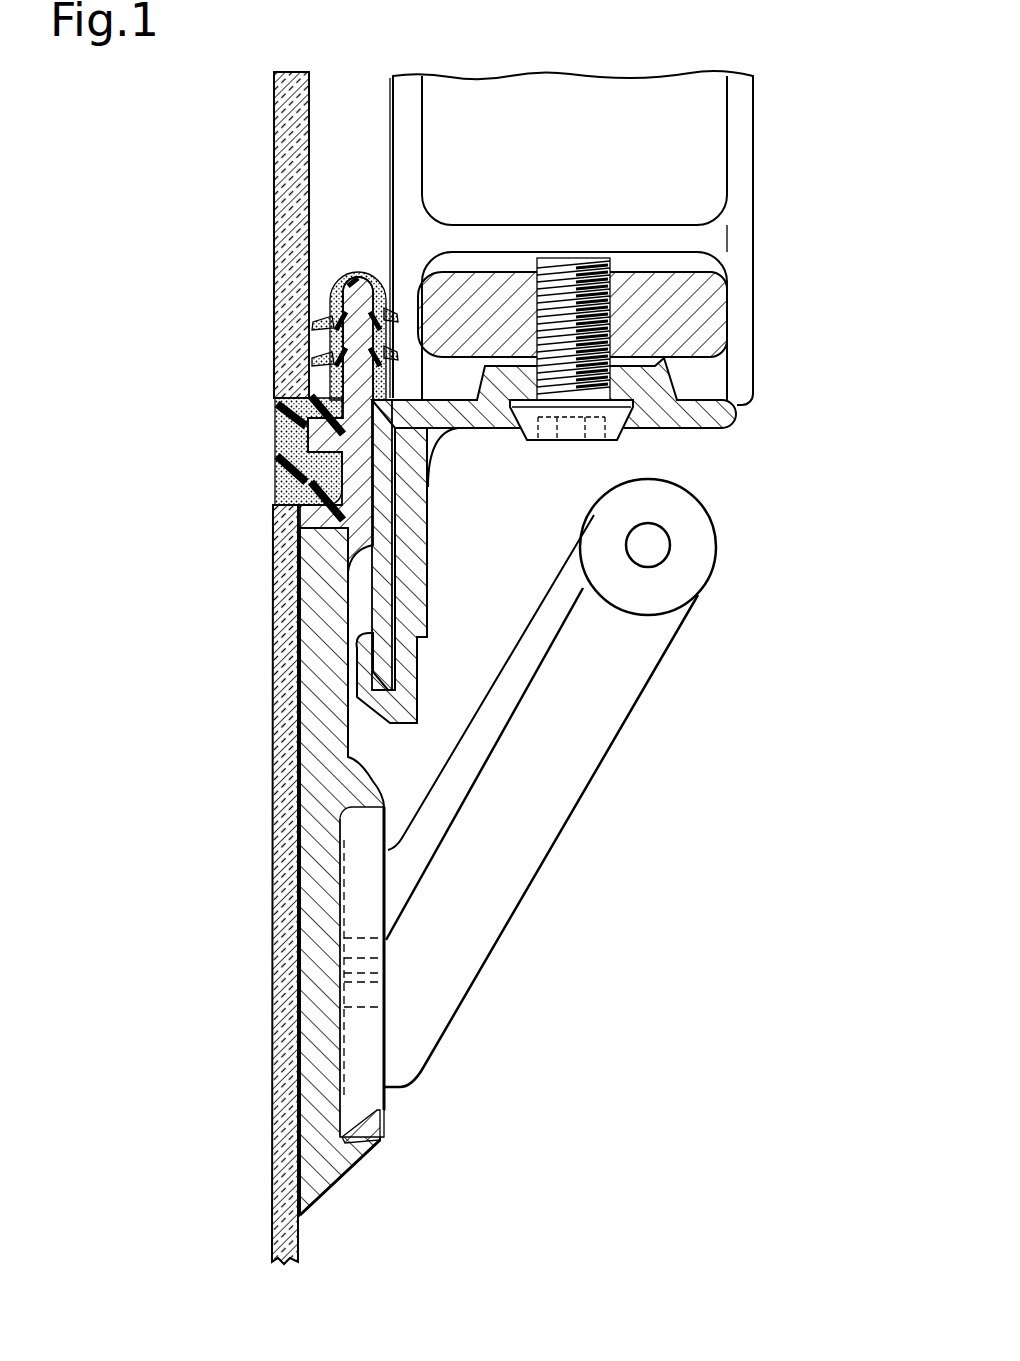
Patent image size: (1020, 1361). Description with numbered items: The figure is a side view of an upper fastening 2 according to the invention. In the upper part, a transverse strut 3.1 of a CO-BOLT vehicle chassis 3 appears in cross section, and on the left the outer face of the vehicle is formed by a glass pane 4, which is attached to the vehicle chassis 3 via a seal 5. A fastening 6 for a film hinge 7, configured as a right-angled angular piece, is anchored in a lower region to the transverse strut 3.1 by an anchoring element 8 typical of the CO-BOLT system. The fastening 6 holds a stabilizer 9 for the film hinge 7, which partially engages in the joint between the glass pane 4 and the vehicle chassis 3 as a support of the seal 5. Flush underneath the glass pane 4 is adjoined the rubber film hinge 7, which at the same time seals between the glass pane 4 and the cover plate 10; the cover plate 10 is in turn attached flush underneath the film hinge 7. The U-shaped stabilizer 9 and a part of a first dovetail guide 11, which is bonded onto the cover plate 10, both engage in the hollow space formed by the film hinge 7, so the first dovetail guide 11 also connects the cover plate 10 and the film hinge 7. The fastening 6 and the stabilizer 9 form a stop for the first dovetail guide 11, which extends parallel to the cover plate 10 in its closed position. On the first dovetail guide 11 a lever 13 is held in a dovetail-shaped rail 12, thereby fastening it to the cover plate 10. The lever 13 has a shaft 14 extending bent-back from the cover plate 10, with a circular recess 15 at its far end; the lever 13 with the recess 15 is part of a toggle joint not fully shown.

The upper fastening 2 is at (635, 783).
The vehicle chassis 3 is at (787, 154).
The transverse strut 3.1 is at (733, 242).
The glass pane 4 is at (285, 172).
The seal 5 is at (340, 278).
The fastening 6 is at (722, 422).
The film hinge 7 is at (300, 462).
The anchoring element 8 is at (605, 313).
The stabilizer 9 is at (350, 343).
The cover plate 10 is at (285, 1113).
The first dovetail guide 11 is at (318, 742).
The dovetail-shaped rail 12 is at (365, 1148).
The lever 13 is at (542, 869).
The shaft 14 is at (602, 757).
The circular recess 15 is at (655, 548).